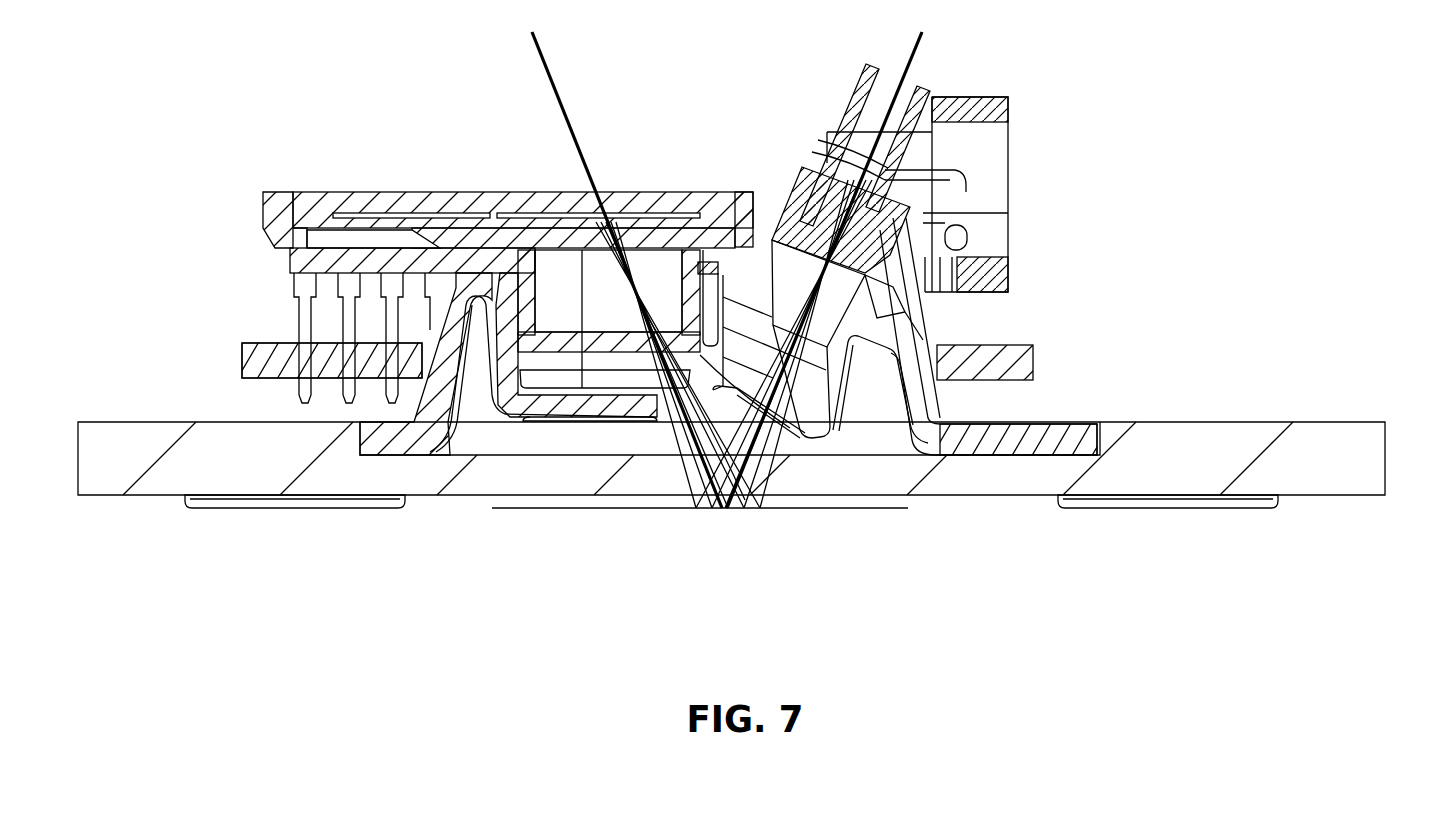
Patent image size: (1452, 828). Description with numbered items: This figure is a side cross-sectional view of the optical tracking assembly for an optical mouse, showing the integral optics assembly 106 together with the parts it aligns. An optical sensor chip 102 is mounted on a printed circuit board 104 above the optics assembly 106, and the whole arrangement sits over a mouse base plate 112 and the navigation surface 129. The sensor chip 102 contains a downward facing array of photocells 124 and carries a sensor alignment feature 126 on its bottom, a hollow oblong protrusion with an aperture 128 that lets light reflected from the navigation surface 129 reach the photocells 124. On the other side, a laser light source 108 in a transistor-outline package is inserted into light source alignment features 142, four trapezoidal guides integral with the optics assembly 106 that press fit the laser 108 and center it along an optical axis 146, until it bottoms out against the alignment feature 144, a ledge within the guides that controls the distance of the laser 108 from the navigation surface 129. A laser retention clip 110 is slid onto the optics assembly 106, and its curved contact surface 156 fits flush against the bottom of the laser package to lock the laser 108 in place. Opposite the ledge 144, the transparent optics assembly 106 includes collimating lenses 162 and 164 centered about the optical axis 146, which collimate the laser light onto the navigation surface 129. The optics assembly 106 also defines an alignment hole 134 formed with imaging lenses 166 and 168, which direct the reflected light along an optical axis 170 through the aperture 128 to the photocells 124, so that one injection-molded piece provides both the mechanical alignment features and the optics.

The optical sensor chip 102 is at (347, 192).
The printed circuit board 104 is at (1033, 363).
The integral optics assembly 106 is at (935, 337).
The laser light source 108 is at (812, 178).
The laser retention clip 110 is at (1009, 110).
The mouse base plate 112 is at (1258, 422).
The array of photocells 124 is at (556, 212).
The sensor alignment feature 126 is at (510, 292).
The aperture 128 is at (668, 305).
The navigation surface 129 is at (770, 508).
The alignment hole 134 is at (548, 355).
The light source alignment features 142 is at (790, 200).
The light source alignment feature 144 is at (797, 253).
The optical axis 146 is at (921, 62).
The curved contact surface 156 is at (832, 158).
The collimating lens 162 is at (812, 418).
The collimating lens 164 is at (680, 343).
The imaging lens 166 is at (668, 395).
The imaging lens 168 is at (715, 392).
The optical axis 170 is at (545, 64).